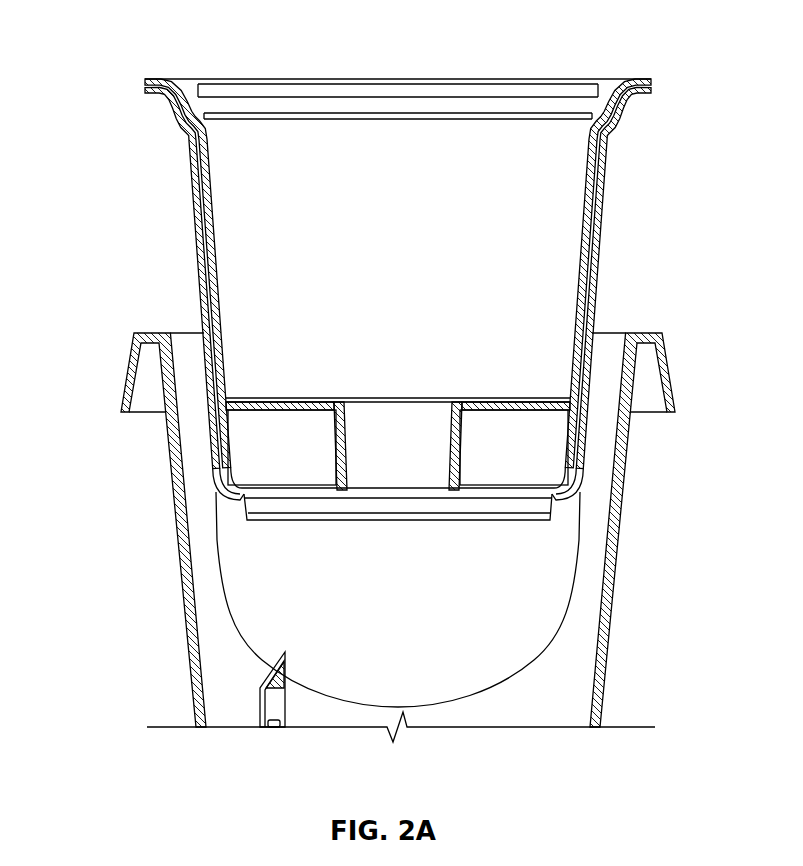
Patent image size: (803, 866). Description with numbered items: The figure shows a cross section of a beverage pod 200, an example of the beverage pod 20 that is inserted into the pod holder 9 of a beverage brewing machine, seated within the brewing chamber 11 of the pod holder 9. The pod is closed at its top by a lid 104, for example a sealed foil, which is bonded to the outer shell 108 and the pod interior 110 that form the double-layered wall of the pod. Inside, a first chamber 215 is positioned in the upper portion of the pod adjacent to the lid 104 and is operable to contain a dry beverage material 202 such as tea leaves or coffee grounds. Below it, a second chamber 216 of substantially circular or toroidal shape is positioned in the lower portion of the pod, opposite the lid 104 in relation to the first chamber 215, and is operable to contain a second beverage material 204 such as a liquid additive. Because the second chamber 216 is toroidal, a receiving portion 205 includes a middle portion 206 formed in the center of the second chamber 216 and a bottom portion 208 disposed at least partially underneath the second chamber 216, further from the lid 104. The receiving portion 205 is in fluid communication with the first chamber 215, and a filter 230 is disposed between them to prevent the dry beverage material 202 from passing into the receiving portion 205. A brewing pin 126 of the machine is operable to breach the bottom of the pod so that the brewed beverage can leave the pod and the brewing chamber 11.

The pod holder 9 is at (406, 537).
The brewing chamber 11 is at (548, 624).
The beverage pod 20 is at (365, 300).
The beverage pod 200 is at (365, 300).
The lid 104 is at (552, 79).
The outer shell 108 is at (598, 248).
The pod interior 110 is at (592, 204).
The brewing pin 126 is at (275, 698).
The dry beverage material 202 is at (391, 274).
The second beverage material 204 is at (245, 468).
The receiving portion 205 is at (311, 460).
The middle portion 206 is at (412, 426).
The bottom portion 208 is at (280, 503).
The first chamber 215 is at (414, 263).
The second chamber 216 is at (398, 410).
The filter 230 is at (507, 398).